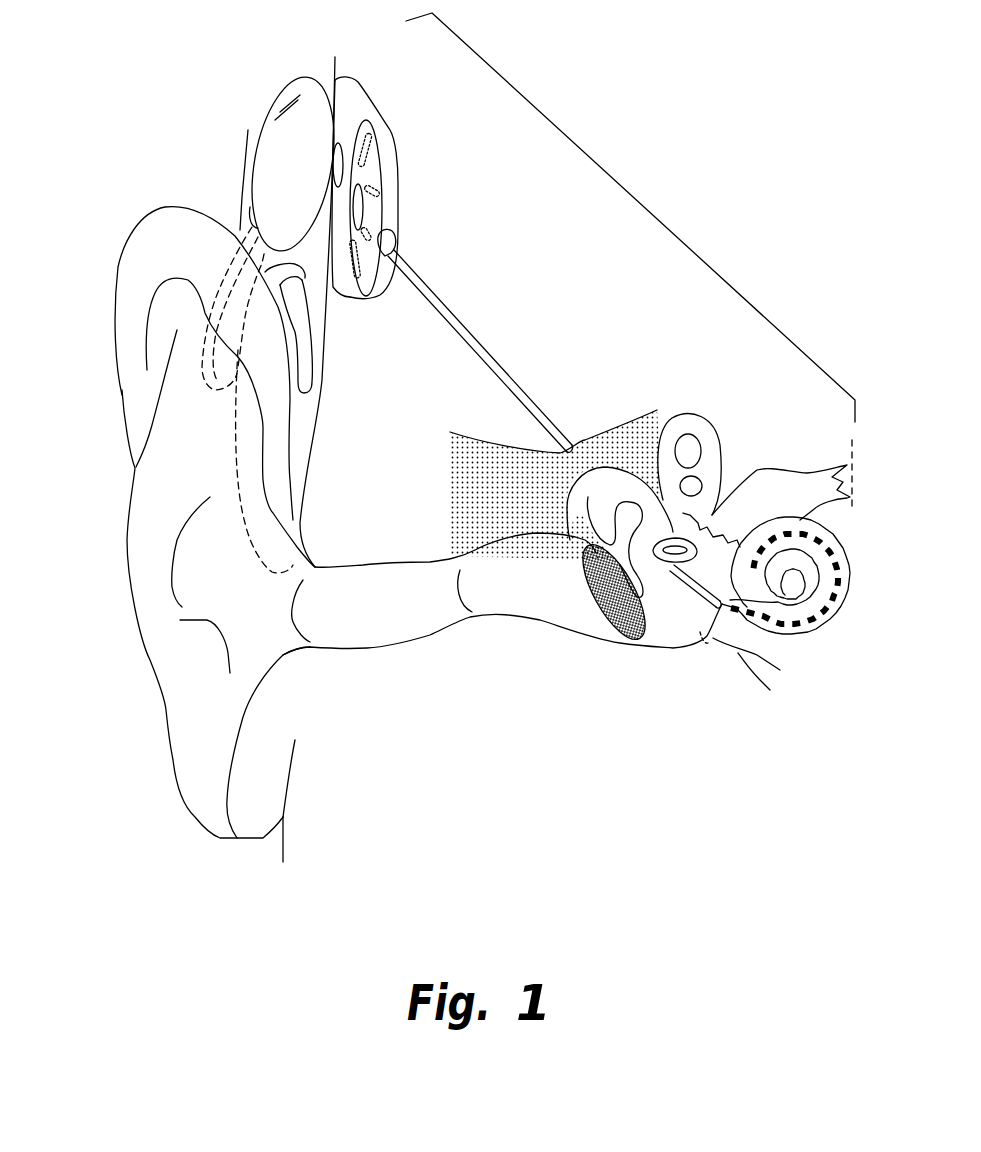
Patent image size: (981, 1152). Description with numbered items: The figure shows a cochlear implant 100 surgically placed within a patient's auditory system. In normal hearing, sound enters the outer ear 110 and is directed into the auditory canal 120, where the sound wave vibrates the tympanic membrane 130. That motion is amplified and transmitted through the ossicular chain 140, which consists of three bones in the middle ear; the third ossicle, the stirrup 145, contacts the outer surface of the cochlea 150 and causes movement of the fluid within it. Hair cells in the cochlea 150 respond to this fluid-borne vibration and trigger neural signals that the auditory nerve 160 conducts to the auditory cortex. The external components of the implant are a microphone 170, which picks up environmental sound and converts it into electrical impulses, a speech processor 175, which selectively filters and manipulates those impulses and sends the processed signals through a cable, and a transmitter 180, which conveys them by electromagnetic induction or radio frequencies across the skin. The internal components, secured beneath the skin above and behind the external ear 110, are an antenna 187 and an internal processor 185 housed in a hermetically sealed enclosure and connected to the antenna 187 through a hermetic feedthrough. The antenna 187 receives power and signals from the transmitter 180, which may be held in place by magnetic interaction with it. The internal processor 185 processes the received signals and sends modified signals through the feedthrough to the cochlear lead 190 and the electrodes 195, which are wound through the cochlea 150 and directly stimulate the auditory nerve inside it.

The cochlear implant 100 is at (610, 175).
The outer ear 110 is at (192, 715).
The auditory canal 120 is at (428, 635).
The tympanic membrane 130 is at (622, 638).
The ossicular chain 140 is at (615, 485).
The stirrup 145 is at (663, 563).
The cochlea 150 is at (837, 613).
The auditory nerve 160 is at (788, 470).
The microphone 170 is at (308, 370).
The speech processor 175 is at (305, 278).
The transmitter 180 is at (272, 127).
The internal processor 185 is at (373, 143).
The antenna 187 is at (343, 93).
The cochlear lead 190 is at (488, 347).
The electrodes 195 is at (778, 623).